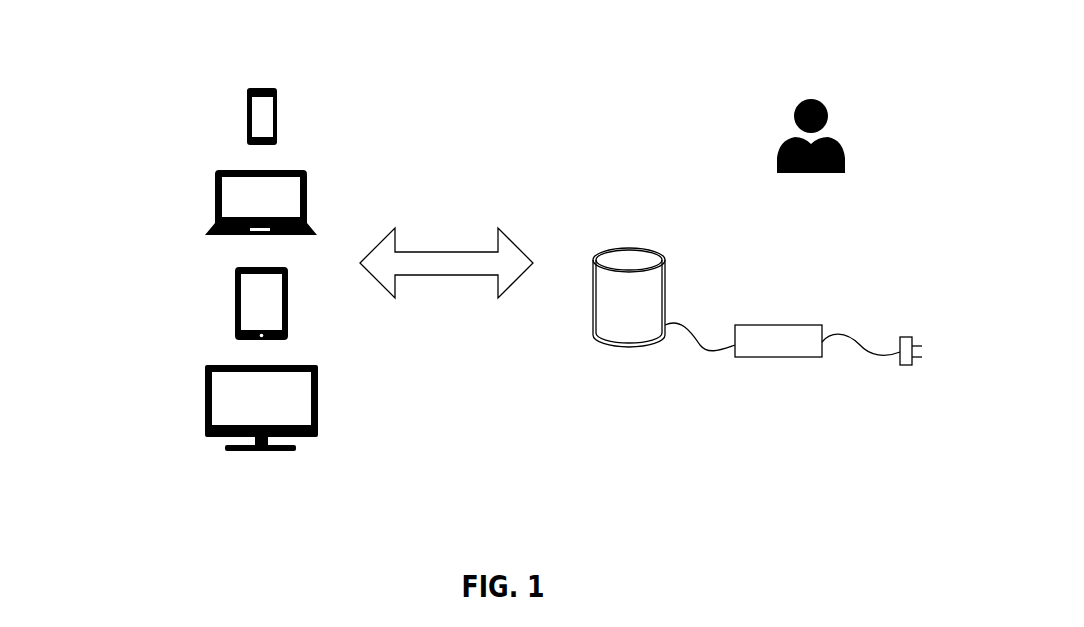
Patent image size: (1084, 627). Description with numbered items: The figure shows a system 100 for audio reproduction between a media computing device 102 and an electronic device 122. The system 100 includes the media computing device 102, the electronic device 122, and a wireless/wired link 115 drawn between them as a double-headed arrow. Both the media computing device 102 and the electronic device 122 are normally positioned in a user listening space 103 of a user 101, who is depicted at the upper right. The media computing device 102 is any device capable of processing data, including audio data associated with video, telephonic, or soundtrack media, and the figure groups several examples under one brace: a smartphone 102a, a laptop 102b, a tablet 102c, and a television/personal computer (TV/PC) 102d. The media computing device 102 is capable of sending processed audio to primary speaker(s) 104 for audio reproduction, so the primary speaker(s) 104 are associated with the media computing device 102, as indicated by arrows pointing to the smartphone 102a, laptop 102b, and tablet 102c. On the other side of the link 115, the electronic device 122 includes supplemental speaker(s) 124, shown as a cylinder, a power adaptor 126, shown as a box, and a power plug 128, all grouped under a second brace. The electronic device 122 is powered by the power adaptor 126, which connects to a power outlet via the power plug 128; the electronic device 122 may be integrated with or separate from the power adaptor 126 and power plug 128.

The system 100 is at (896, 64).
The user 101 is at (842, 143).
The media computing device 102 is at (200, 472).
The smartphone 102a is at (243, 118).
The laptop 102b is at (212, 196).
The tablet 102c is at (232, 303).
The television/personal computer (TV/PC) 102d is at (205, 406).
The user listening space 103 is at (633, 83).
The primary speaker(s) 104 is at (297, 265).
The wireless/wired link 115 is at (443, 276).
The electronic device 122 is at (577, 472).
The supplemental speaker(s) 124 is at (627, 246).
The power adaptor 126 is at (778, 325).
The power plug 128 is at (905, 366).